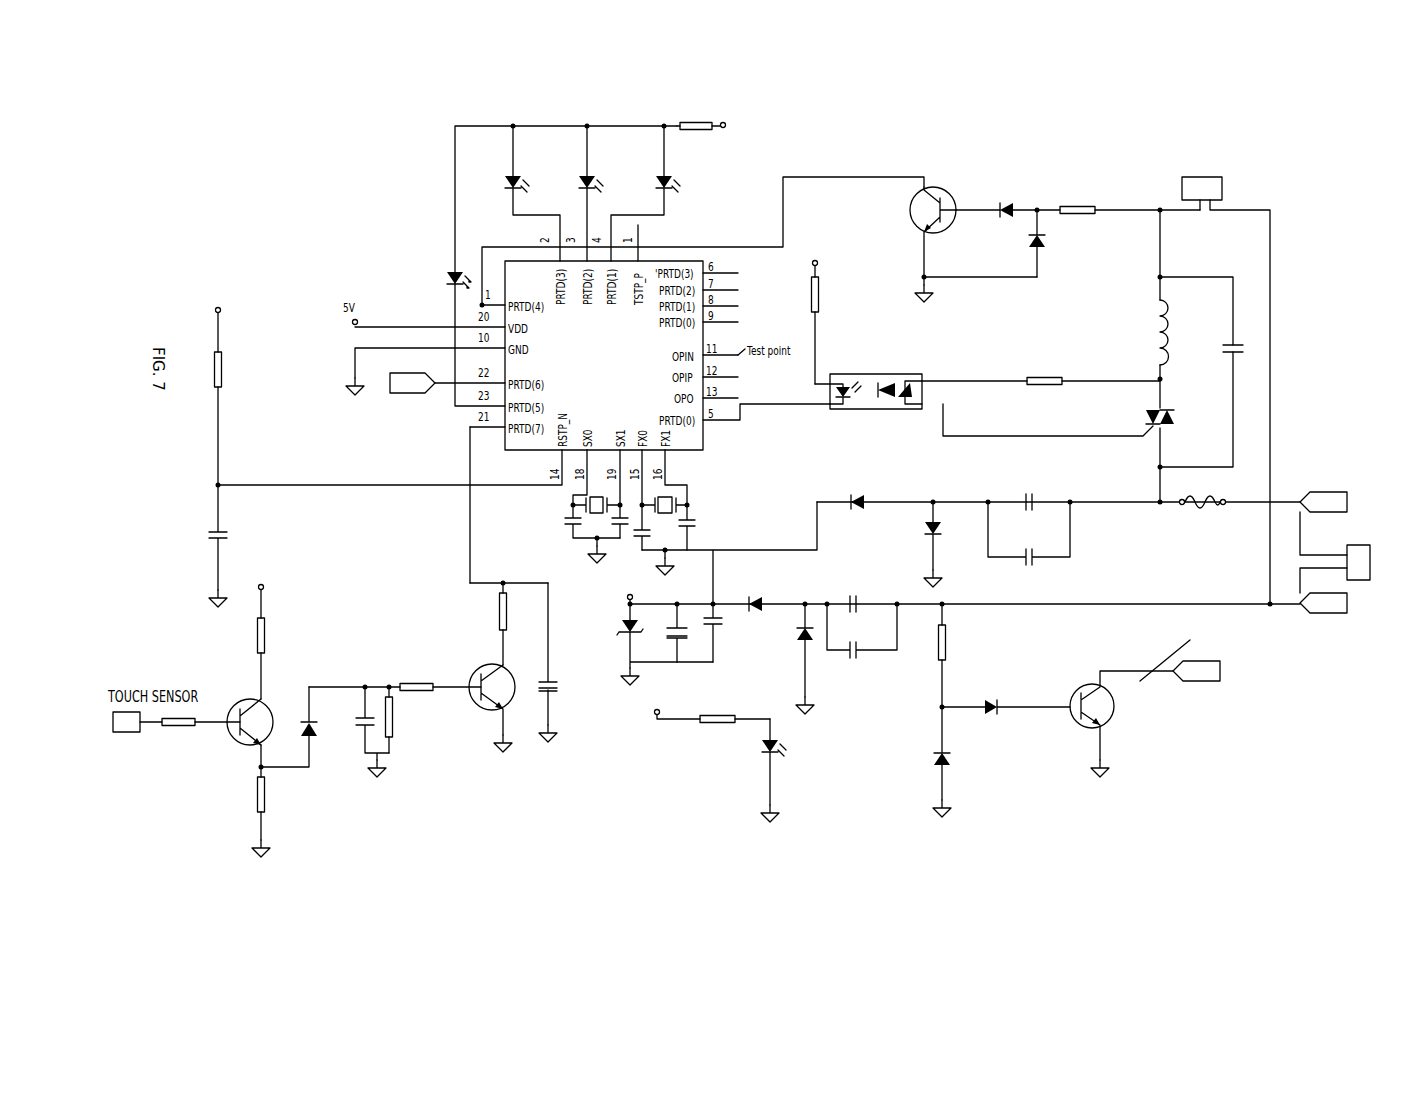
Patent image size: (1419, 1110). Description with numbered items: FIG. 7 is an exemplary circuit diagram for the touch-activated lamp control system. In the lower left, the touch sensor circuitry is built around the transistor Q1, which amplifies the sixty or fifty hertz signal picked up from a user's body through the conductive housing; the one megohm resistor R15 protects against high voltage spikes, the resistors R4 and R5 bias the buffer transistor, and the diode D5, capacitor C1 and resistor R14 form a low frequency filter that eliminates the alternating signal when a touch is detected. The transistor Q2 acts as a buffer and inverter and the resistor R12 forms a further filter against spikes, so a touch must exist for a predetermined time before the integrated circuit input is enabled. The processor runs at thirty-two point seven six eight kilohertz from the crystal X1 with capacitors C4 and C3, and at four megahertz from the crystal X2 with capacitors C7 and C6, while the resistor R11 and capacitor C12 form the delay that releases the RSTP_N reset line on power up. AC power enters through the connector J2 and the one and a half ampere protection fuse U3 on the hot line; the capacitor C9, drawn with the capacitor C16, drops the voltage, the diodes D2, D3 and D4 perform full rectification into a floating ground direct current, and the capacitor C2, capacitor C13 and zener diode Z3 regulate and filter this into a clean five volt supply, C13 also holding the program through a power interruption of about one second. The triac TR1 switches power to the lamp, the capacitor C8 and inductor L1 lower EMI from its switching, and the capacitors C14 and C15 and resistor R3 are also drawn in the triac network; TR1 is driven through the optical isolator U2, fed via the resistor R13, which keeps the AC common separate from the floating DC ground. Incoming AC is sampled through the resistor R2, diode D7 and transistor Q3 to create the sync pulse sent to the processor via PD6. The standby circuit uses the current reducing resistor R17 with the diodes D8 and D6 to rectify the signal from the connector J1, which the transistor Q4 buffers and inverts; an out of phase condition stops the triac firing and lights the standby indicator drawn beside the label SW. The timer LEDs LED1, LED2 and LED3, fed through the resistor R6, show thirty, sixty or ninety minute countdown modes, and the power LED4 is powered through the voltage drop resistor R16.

The standby switch LED SW is at (430, 219).
The light emitting diode LED1 is at (663, 193).
The light emitting diode LED2 is at (604, 193).
The light emitting diode LED3 is at (532, 193).
The power LED LED4 is at (820, 770).
The resistor 1K R6 is at (697, 114).
The IC pulse input PD6 is at (412, 383).
The delay circuit resistor R11 is at (227, 387).
The delay circuit capacitor C12 is at (241, 546).
The bias resistor R4 is at (272, 633).
The amplifier transistor Q1 is at (239, 727).
The protection resistor R15 is at (278, 720).
The bias resistor R5 is at (245, 801).
The filter diode D5 is at (289, 727).
The filter capacitor C1 is at (351, 732).
The filter resistor R14 is at (440, 688).
The buffer and inverter transistor Q2 is at (483, 696).
The filter resistor R12 is at (516, 624).
The oscillator capacitor C3 is at (591, 623).
The crystal X1 is at (555, 497).
The oscillator capacitor C4 is at (590, 541).
The crystal X2 is at (689, 487).
The oscillator capacitor C7 is at (639, 551).
The oscillator capacitor C6 is at (697, 535).
The zener diode Z3 is at (633, 637).
The regulation and filter capacitor C2 is at (683, 614).
The filter and hold-up capacitor C13 is at (731, 644).
The voltage drop resistor R16 is at (708, 719).
The rectifier diode D2 is at (758, 603).
The rectifier diode D4 is at (818, 591).
The voltage dropping capacitor C9 is at (911, 591).
The capacitor 0.47u/200V C16 is at (864, 640).
The sampling resistor R2 is at (959, 655).
The sampling diode D7 is at (1006, 693).
The rectifying diode D6 is at (993, 493).
The sync signal transistor Q3 is at (1164, 701).
The rectifier diode D3 is at (955, 544).
The capacitor 0.47u/200V C14 is at (1048, 501).
The capacitor 0.47u/200V C15 is at (1052, 545).
The protection fuse U3 is at (1189, 505).
The AC power connector CON2 J2 is at (1310, 551).
The inductor L1 is at (1182, 332).
The EMI capacitor C8 is at (1287, 354).
The triac TR1 is at (1074, 433).
The resistor 4.7K R3 is at (1041, 379).
The optical isolator U2 is at (875, 392).
The resistor 680 R13 is at (824, 314).
The standby buffer transistor Q4 is at (957, 206).
The rectifying diode D8 is at (1064, 243).
The current reducer resistor R17 is at (1080, 199).
The connector CON2 J1 is at (1225, 371).